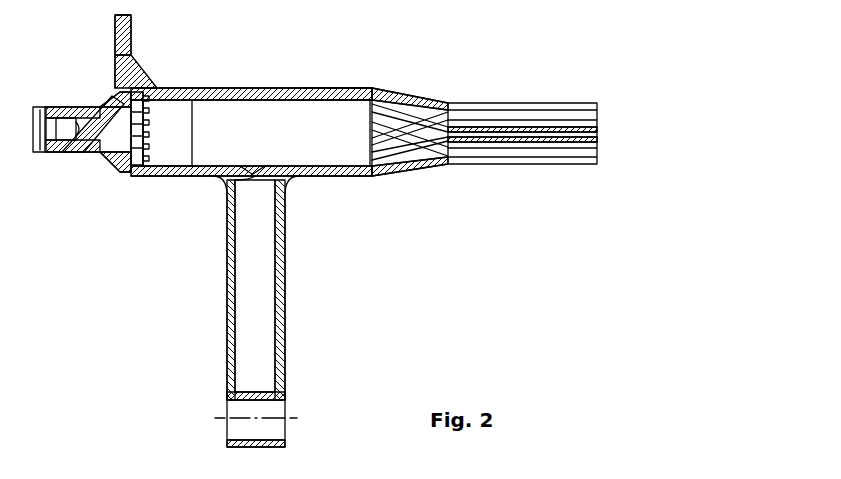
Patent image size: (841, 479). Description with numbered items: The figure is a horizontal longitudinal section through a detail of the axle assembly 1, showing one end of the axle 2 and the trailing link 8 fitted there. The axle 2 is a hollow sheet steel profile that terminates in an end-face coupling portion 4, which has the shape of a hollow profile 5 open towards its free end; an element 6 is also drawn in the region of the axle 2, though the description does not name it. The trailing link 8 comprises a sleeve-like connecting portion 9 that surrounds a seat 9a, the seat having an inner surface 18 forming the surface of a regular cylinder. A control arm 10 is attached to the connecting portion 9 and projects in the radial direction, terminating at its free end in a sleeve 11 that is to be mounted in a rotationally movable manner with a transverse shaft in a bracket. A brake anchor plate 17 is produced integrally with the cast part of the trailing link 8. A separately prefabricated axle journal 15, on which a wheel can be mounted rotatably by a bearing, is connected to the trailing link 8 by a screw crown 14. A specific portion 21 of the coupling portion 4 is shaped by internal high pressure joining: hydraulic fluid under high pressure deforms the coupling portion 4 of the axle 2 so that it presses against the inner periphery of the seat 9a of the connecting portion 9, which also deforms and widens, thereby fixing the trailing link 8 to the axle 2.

The axle assembly 1 is at (348, 243).
The axle 2 is at (485, 103).
The end-face coupling portion 4 is at (362, 177).
The hollow profile 5 is at (207, 150).
The optical fiber 6 is at (515, 143).
The trailing link 8 is at (165, 76).
The connecting portion 9 is at (252, 88).
The seat 9a is at (158, 138).
The control arm 10 is at (228, 330).
The sleeve 11 is at (230, 415).
The screw crown 14 is at (153, 157).
The axle journal 15 is at (80, 152).
The brake anchor plate 17 is at (132, 58).
The inner surface 18 is at (326, 90).
The specific portion 21 is at (281, 133).